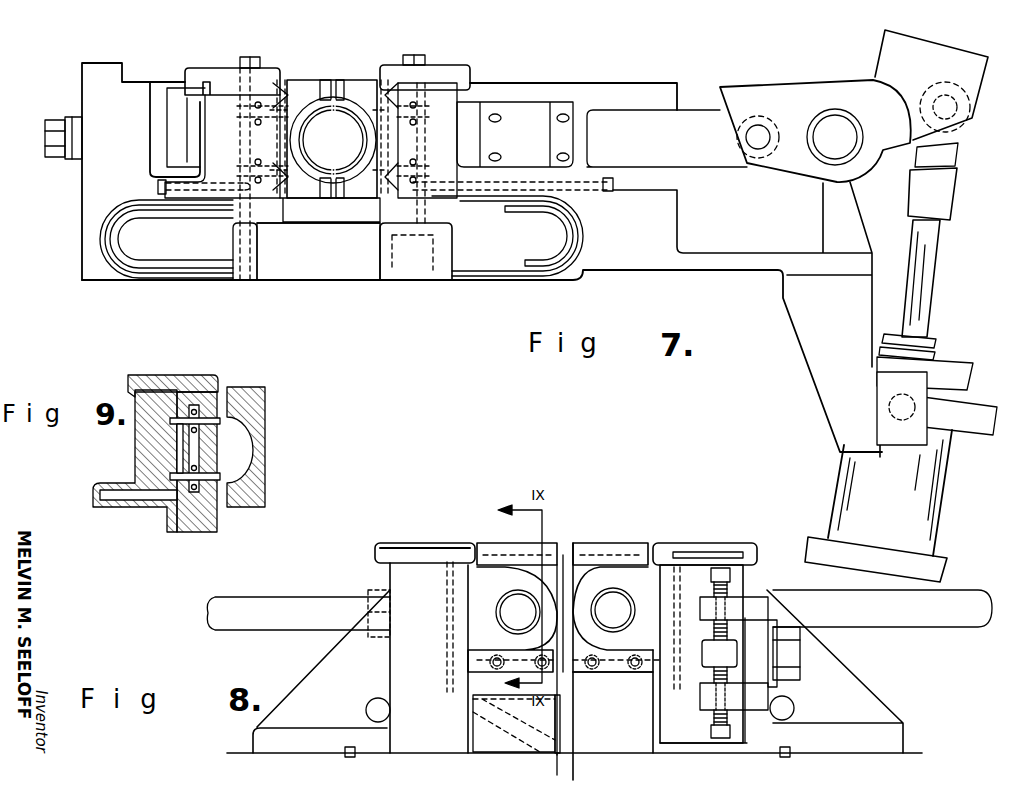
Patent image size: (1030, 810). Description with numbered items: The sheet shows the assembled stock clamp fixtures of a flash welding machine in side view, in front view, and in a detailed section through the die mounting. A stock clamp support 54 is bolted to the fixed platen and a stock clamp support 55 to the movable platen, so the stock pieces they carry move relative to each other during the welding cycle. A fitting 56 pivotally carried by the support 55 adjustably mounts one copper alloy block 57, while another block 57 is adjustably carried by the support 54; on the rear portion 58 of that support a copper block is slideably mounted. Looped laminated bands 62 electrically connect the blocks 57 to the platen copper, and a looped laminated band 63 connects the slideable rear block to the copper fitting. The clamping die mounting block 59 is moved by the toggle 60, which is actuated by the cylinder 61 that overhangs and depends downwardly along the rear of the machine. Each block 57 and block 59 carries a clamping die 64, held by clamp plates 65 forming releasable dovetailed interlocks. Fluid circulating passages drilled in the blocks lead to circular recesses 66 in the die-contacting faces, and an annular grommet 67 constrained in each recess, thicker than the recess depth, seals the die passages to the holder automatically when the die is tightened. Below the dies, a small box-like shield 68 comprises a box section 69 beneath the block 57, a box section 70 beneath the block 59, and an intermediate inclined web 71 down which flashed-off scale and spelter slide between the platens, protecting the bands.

In FIG. 8, the stock clamp support 54 is at (403, 747).
In FIG. 8, the stock clamp support 55 is at (823, 743).
In FIG. 8, the fitting 56 is at (735, 577).
In FIG. 7, the copper alloy block 57 is at (217, 95).
In FIG. 9, the copper alloy block 57 is at (147, 455).
In FIG. 8, the copper alloy block 57 is at (515, 570).
In FIG. 7, the rear portion of the support 58 is at (637, 257).
In FIG. 7, the clamping die mounting block 59 is at (523, 118).
In FIG. 7, the toggle 60 is at (773, 95).
In FIG. 7, the cylinder 61 is at (925, 493).
In FIG. 7, the looped laminated band 62 is at (180, 270).
In FIG. 8, the looped laminated band 62 is at (625, 740).
In FIG. 7, the looped laminated band 63 is at (490, 270).
In FIG. 7, the clamping die 64 is at (308, 90).
In FIG. 9, the clamping die 64 is at (247, 390).
In FIG. 7, the clamp plate 65 is at (447, 77).
In FIG. 9, the clamp plate 65 is at (135, 383).
In FIG. 9, the circular recess 66 is at (193, 517).
In FIG. 9, the annular grommet 67 is at (233, 460).
In FIG. 7, the box-like shield 68 is at (369, 281).
In FIG. 7, the box section 69 is at (253, 270).
In FIG. 8, the box section 69 is at (552, 735).
In FIG. 7, the box section 70 is at (427, 267).
In FIG. 7, the inclined web 71 is at (323, 270).
In FIG. 8, the inclined web 71 is at (525, 725).